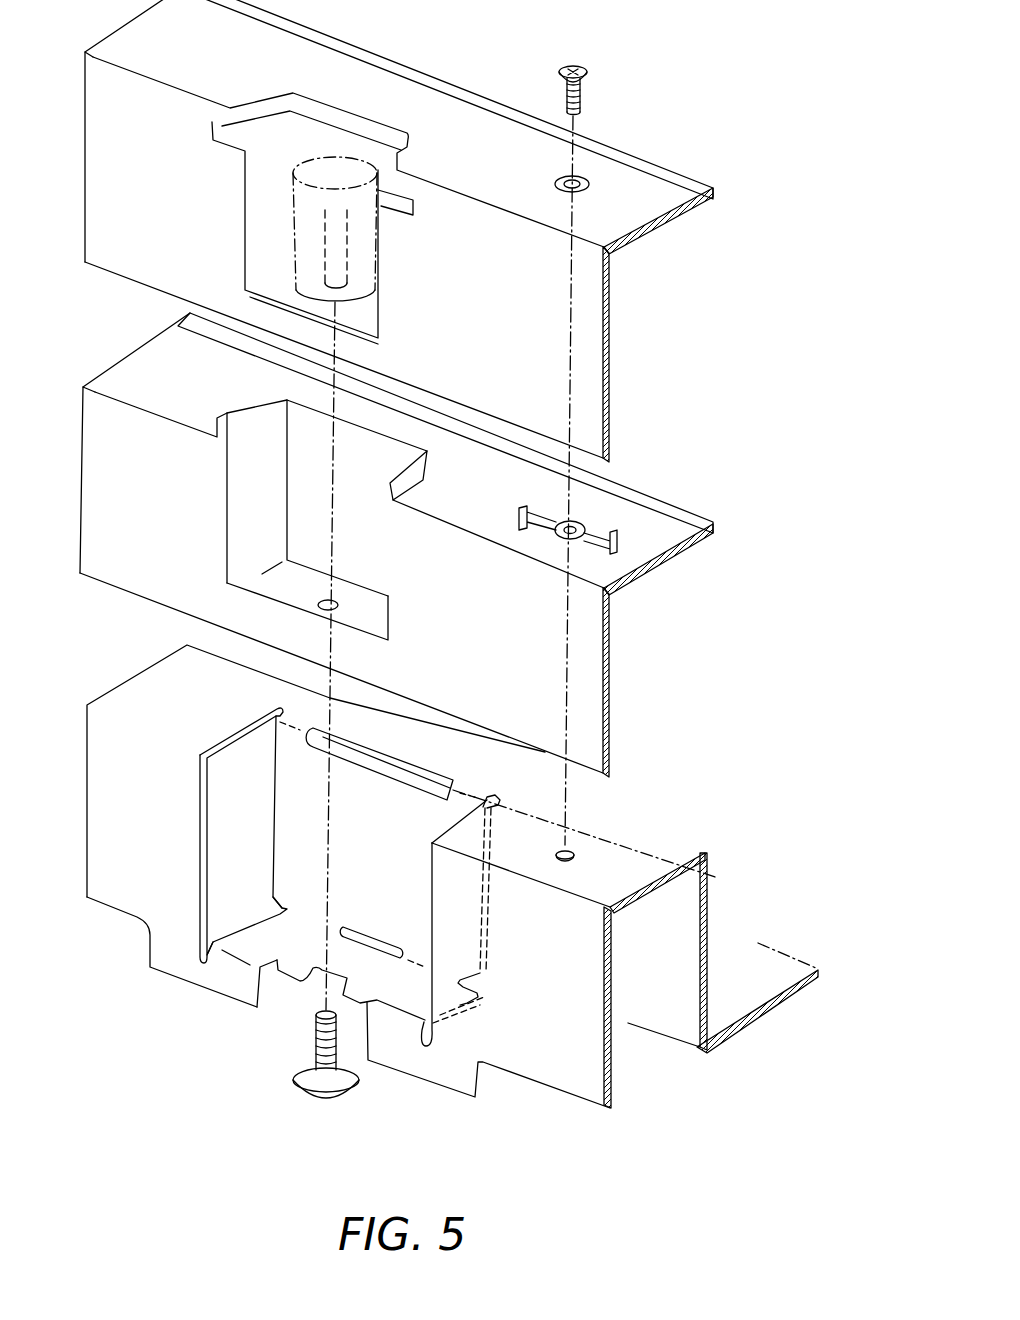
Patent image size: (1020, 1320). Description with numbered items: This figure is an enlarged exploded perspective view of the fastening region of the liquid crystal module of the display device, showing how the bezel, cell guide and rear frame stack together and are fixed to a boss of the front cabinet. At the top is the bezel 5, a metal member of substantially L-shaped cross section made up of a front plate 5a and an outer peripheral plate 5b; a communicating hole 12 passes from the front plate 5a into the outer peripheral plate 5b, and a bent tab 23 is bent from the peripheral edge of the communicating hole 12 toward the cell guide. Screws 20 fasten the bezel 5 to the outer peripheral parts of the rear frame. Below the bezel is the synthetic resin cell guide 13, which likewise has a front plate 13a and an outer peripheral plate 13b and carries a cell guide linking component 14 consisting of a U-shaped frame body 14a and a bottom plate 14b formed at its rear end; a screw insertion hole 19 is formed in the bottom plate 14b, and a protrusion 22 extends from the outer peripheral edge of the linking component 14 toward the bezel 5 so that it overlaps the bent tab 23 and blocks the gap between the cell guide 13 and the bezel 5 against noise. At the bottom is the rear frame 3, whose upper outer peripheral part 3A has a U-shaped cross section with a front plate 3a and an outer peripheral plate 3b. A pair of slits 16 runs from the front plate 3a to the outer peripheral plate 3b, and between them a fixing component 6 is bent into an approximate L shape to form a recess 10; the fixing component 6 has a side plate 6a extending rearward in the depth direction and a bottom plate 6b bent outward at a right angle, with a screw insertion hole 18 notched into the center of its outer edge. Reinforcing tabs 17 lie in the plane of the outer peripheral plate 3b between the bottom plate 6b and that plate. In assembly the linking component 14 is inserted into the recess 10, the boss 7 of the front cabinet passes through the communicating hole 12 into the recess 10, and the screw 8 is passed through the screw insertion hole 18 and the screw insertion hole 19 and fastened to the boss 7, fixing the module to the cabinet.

The rear frame 3 is at (757, 1025).
The upper outer peripheral part 3A is at (640, 823).
The front plate 3a is at (663, 863).
The outer peripheral plate 3b is at (587, 1072).
The bezel 5 is at (395, 62).
The front plate 5a is at (640, 224).
The outer peripheral plate 5b is at (587, 350).
The fixing component 6 is at (113, 978).
The side plate 6a is at (287, 853).
The bottom plate 6b is at (262, 928).
The boss 7 is at (360, 273).
The screw 8 is at (293, 1080).
The recess 10 is at (230, 841).
The communicating hole 12 is at (267, 220).
The cell guide 13 is at (643, 487).
The front plate 13a is at (653, 553).
The outer peripheral plate 13b is at (593, 693).
The cell guide linking component 14 is at (136, 457).
The U-shaped frame body 14a is at (243, 477).
The bottom plate 14b is at (277, 567).
The slit 16 is at (200, 803).
The reinforcing tab 17 is at (238, 990).
The screw insertion hole 18 is at (312, 980).
The screw insertion hole 19 is at (317, 608).
The screw 20 is at (565, 66).
The protrusion 22 is at (413, 475).
The bent tab 23 is at (363, 131).